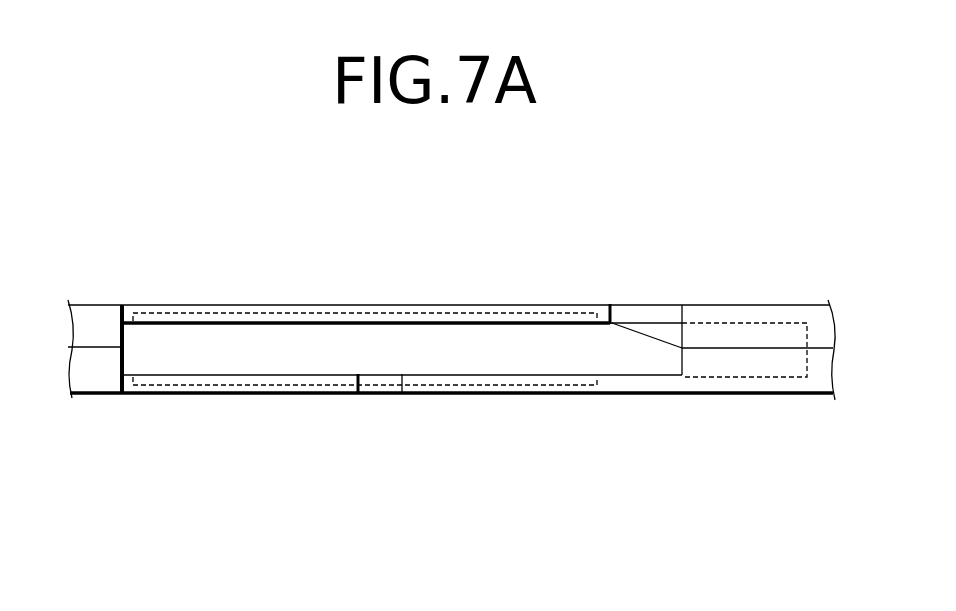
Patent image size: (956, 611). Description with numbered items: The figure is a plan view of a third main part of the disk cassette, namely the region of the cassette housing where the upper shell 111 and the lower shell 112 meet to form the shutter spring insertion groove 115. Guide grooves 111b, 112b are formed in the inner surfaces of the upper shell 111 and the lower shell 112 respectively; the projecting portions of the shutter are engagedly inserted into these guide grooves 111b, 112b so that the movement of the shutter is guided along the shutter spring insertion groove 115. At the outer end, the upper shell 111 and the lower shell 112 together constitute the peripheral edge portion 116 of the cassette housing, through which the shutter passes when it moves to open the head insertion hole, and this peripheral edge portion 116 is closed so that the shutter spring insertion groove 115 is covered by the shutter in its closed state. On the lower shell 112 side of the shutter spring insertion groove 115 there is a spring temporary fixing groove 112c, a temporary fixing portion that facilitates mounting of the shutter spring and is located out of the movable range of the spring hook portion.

The upper shell 111 is at (100, 307).
The lower shell 112 is at (96, 395).
The guide groove 111b is at (255, 305).
The guide groove 112b is at (263, 395).
The spring temporary fixing groove 112c is at (378, 395).
The shutter spring insertion groove 115 is at (411, 346).
The peripheral edge portion 116 is at (750, 348).